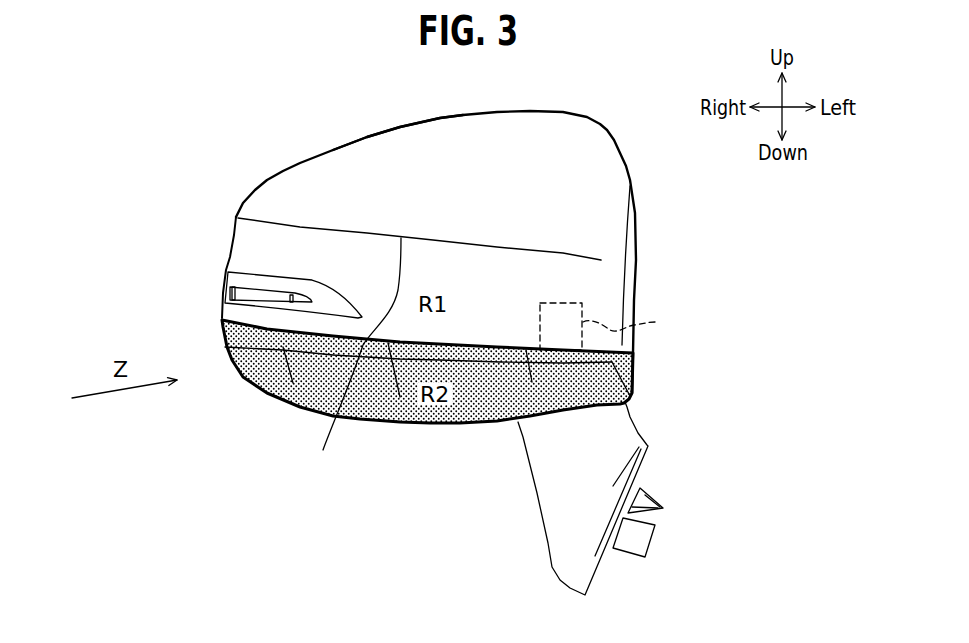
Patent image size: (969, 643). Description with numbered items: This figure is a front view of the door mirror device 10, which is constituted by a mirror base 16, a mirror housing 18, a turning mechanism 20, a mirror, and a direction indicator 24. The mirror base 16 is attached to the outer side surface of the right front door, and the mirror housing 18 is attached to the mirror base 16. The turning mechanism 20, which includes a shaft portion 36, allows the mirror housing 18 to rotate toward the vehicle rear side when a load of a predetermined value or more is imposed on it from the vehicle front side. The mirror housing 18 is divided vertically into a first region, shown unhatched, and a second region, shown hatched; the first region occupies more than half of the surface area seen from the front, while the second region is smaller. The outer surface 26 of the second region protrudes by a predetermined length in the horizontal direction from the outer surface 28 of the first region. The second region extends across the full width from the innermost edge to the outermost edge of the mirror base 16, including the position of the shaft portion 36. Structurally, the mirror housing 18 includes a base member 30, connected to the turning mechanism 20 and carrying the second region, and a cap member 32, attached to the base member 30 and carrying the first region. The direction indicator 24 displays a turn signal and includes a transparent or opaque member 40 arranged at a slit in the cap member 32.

The door mirror device 10 is at (622, 112).
The mirror base 16 is at (552, 502).
The mirror housing 18 is at (296, 161).
The turning mechanism 20 is at (592, 301).
The direction indicator 24 is at (224, 288).
The outer surface of the second region 26 is at (400, 359).
The outer surface of the first region 28 is at (357, 356).
The base member 30 is at (264, 367).
The cap member 32 is at (400, 142).
The shaft portion 36 is at (634, 320).
The transparent or opaque member 40 is at (255, 295).